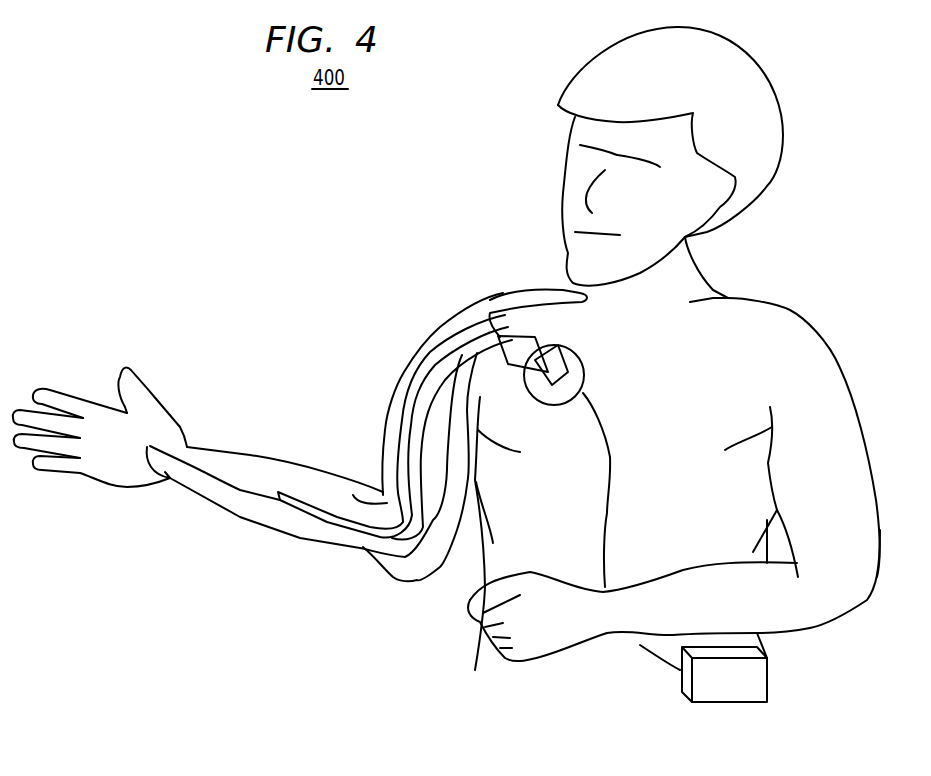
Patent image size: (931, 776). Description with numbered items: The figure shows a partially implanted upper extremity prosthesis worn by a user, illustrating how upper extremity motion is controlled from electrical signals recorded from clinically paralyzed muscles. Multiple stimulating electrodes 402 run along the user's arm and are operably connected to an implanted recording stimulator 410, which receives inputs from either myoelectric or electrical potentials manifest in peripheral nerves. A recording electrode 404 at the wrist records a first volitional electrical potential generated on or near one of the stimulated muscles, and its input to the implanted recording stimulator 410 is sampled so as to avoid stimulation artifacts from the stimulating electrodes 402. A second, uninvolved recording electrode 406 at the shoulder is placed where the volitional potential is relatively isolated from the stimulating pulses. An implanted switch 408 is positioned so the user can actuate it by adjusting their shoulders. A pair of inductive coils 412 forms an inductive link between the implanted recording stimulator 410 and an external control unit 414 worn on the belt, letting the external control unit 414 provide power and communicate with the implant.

The stimulating electrodes 402 is at (278, 492).
The recording electrode 404 is at (147, 447).
The uninvolved recording electrode 406 is at (575, 293).
The implanted switch 408 is at (445, 590).
The implanted recording stimulator 410 is at (550, 360).
The inductive coils 412 is at (585, 375).
The external control unit 414 is at (722, 702).